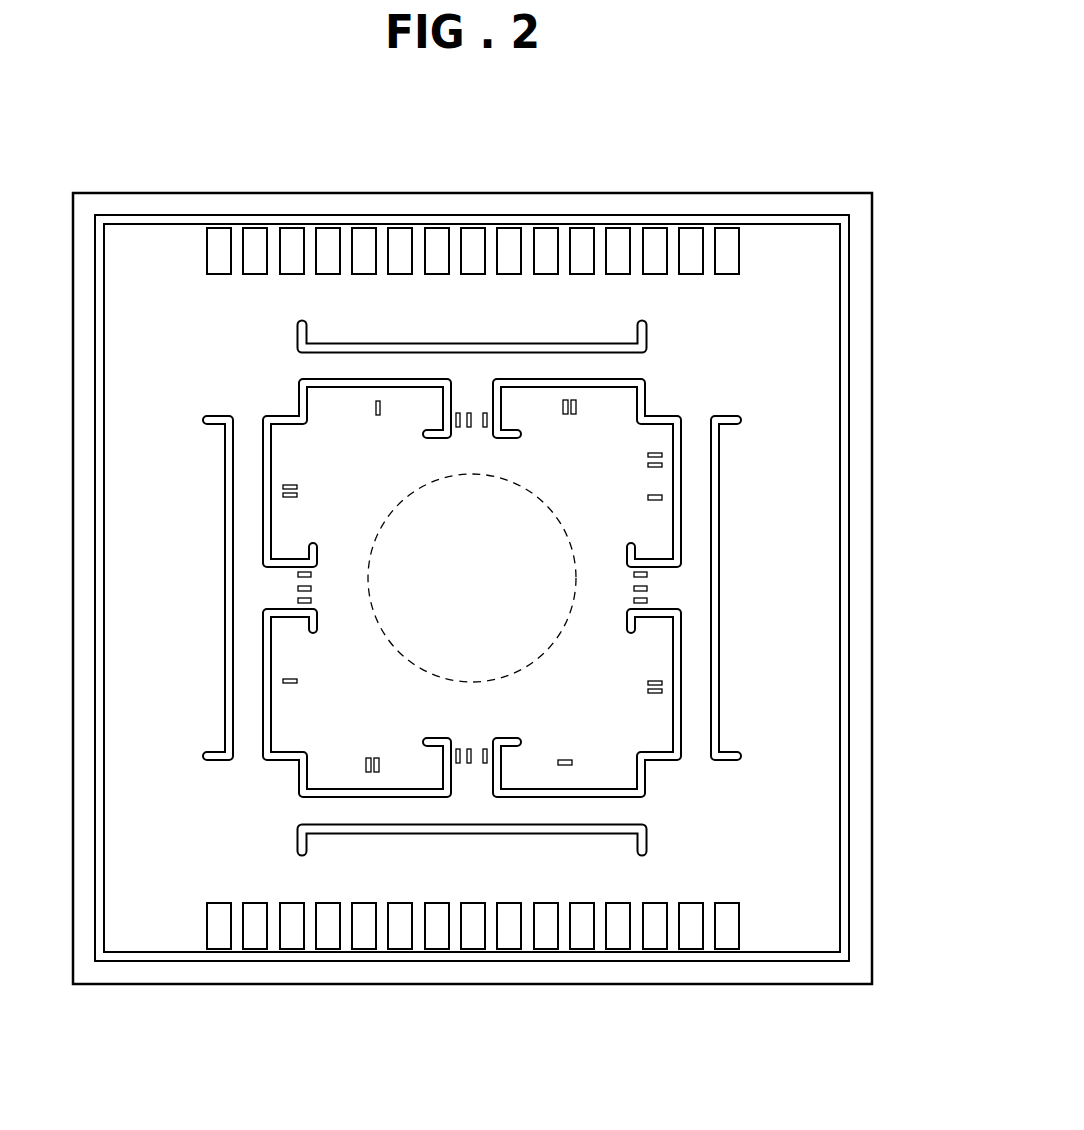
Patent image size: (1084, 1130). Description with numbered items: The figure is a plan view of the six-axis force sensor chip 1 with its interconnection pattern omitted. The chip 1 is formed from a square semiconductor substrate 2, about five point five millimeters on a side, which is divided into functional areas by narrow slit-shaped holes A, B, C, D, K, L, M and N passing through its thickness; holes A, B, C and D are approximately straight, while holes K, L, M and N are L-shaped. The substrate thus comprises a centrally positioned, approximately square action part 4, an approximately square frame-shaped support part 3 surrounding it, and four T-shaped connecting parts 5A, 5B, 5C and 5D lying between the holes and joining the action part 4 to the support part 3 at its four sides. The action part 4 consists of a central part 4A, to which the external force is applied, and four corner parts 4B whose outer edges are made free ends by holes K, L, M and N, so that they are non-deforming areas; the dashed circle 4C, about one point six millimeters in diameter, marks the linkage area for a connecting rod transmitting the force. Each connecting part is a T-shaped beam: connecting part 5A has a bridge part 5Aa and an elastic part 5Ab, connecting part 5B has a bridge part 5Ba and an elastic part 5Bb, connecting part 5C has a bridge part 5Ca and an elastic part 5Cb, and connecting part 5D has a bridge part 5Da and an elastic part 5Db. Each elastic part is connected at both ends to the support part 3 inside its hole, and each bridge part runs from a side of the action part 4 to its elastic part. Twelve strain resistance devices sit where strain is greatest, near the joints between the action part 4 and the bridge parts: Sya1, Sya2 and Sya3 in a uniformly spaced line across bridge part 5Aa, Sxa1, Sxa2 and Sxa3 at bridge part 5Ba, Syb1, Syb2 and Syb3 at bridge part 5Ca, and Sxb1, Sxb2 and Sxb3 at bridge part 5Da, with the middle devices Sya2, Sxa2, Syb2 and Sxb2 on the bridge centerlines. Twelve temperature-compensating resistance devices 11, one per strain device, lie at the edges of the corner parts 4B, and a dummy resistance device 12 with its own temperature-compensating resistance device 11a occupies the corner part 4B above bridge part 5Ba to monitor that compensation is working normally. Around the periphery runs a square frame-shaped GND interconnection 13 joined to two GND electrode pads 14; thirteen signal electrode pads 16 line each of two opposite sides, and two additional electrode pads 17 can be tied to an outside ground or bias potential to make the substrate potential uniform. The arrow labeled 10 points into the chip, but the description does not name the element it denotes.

The six-axis force sensor chip 1 is at (766, 180).
The semiconductor substrate 2 is at (872, 258).
The support part 3 is at (820, 374).
The action part 4 is at (483, 590).
The central part 4A is at (535, 532).
The corner parts 4B is at (283, 424).
The circle 4C is at (545, 650).
The connecting part 5A is at (470, 368).
The bridge part 5Aa is at (447, 404).
The elastic part 5Ab is at (385, 368).
The connecting part 5B is at (701, 589).
The bridge part 5Ba is at (662, 613).
The elastic part 5Bb is at (716, 486).
The connecting part 5C is at (472, 810).
The bridge part 5Ca is at (505, 780).
The elastic part 5Cb is at (386, 810).
The connecting part 5D is at (243, 589).
The bridge part 5Da is at (278, 587).
The elastic part 5Db is at (243, 701).
The sensor chip 10 is at (712, 333).
The temperature-compensating resistance devices 11 is at (376, 409).
The temperature-compensating resistance device 11a is at (648, 456).
The dummy resistance device 12 is at (648, 466).
The GND interconnection 13 is at (850, 316).
The GND electrode pads 14 is at (220, 240).
The signal electrode pads 16 is at (437, 243).
The additional electrode pads 17 is at (727, 240).
The strain resistance device Sxa1 is at (634, 601).
The strain resistance device Sxa2 is at (634, 588).
The strain resistance device Sxa3 is at (634, 575).
The strain resistance device Sxb1 is at (311, 575).
The strain resistance device Sxb2 is at (311, 588).
The strain resistance device Sxb3 is at (311, 601).
The strain resistance device Sya1 is at (487, 430).
The strain resistance device Sya2 is at (470, 430).
The strain resistance device Sya3 is at (456, 430).
The strain resistance device Syb1 is at (457, 745).
The strain resistance device Syb2 is at (470, 745).
The strain resistance device Syb3 is at (487, 745).
The hole A is at (603, 352).
The hole B is at (720, 538).
The hole C is at (603, 824).
The hole D is at (224, 538).
The hole K is at (300, 398).
The hole L is at (648, 398).
The hole M is at (648, 770).
The hole N is at (296, 770).